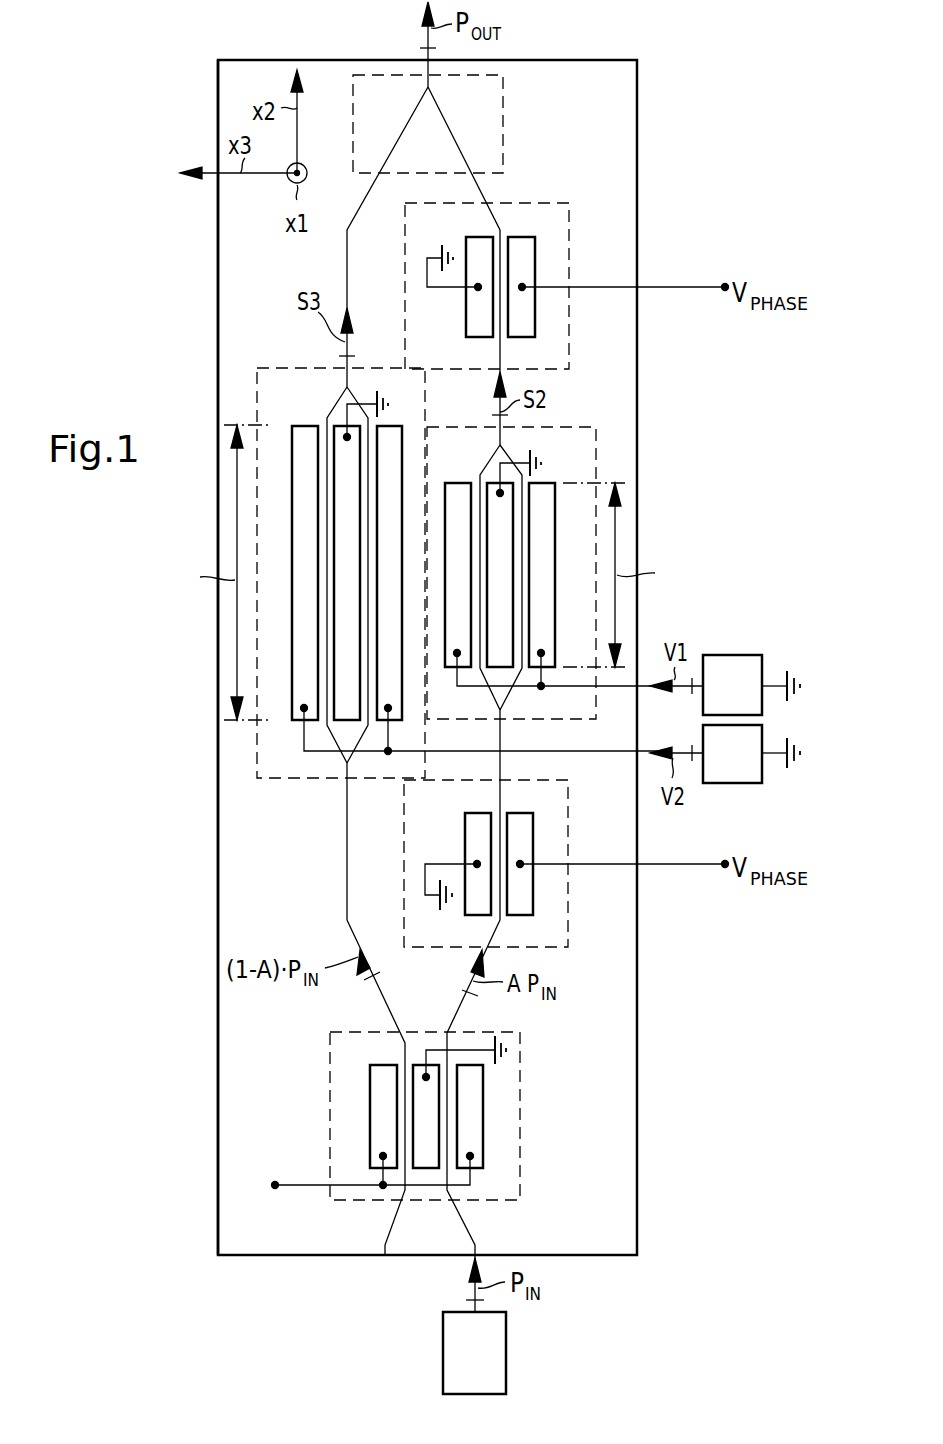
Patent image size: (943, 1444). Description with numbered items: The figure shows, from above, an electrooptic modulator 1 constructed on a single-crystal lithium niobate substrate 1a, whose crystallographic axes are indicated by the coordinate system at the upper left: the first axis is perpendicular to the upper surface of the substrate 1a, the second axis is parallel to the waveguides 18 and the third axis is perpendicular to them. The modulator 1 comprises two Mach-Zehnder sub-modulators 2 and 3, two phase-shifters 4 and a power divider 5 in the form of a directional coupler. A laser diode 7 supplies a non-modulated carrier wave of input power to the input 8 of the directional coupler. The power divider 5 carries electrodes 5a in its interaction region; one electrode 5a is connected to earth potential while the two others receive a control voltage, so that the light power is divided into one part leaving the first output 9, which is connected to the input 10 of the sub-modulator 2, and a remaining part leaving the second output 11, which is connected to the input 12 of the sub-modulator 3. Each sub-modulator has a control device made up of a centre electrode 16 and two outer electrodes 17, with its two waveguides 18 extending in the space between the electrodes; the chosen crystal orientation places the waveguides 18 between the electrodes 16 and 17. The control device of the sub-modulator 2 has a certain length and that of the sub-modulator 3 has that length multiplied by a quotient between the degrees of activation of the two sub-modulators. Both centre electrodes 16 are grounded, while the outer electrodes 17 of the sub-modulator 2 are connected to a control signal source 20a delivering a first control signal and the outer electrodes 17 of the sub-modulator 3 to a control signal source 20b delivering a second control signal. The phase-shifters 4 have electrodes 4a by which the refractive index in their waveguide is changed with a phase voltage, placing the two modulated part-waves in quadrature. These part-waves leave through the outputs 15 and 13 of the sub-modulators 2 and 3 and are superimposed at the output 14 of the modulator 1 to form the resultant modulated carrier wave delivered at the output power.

The electrooptic modulator 1 is at (218, 745).
The lithium niobate substrate 1a is at (230, 267).
The sub-modulator 2 is at (554, 658).
The sub-modulator 3 is at (412, 627).
The phase-shifter 4 is at (569, 238).
The electrodes of the phase-shifters 4a is at (530, 240).
The power divider 5 is at (383, 1117).
The electrodes of the power divider 5a is at (422, 1160).
The laser diode 7 is at (507, 1352).
The input 8 is at (446, 1195).
The first output 9 is at (440, 1030).
The input 10 is at (500, 710).
The second output 11 is at (405, 1043).
The input 12 is at (346, 768).
The output 13 is at (345, 386).
The output 14 is at (428, 72).
The output 15 is at (500, 445).
The centre electrode 16 is at (340, 570).
The outer electrodes 17 is at (390, 640).
The waveguides 18 is at (368, 490).
The control signal source 20a is at (734, 655).
The control signal source 20b is at (735, 785).